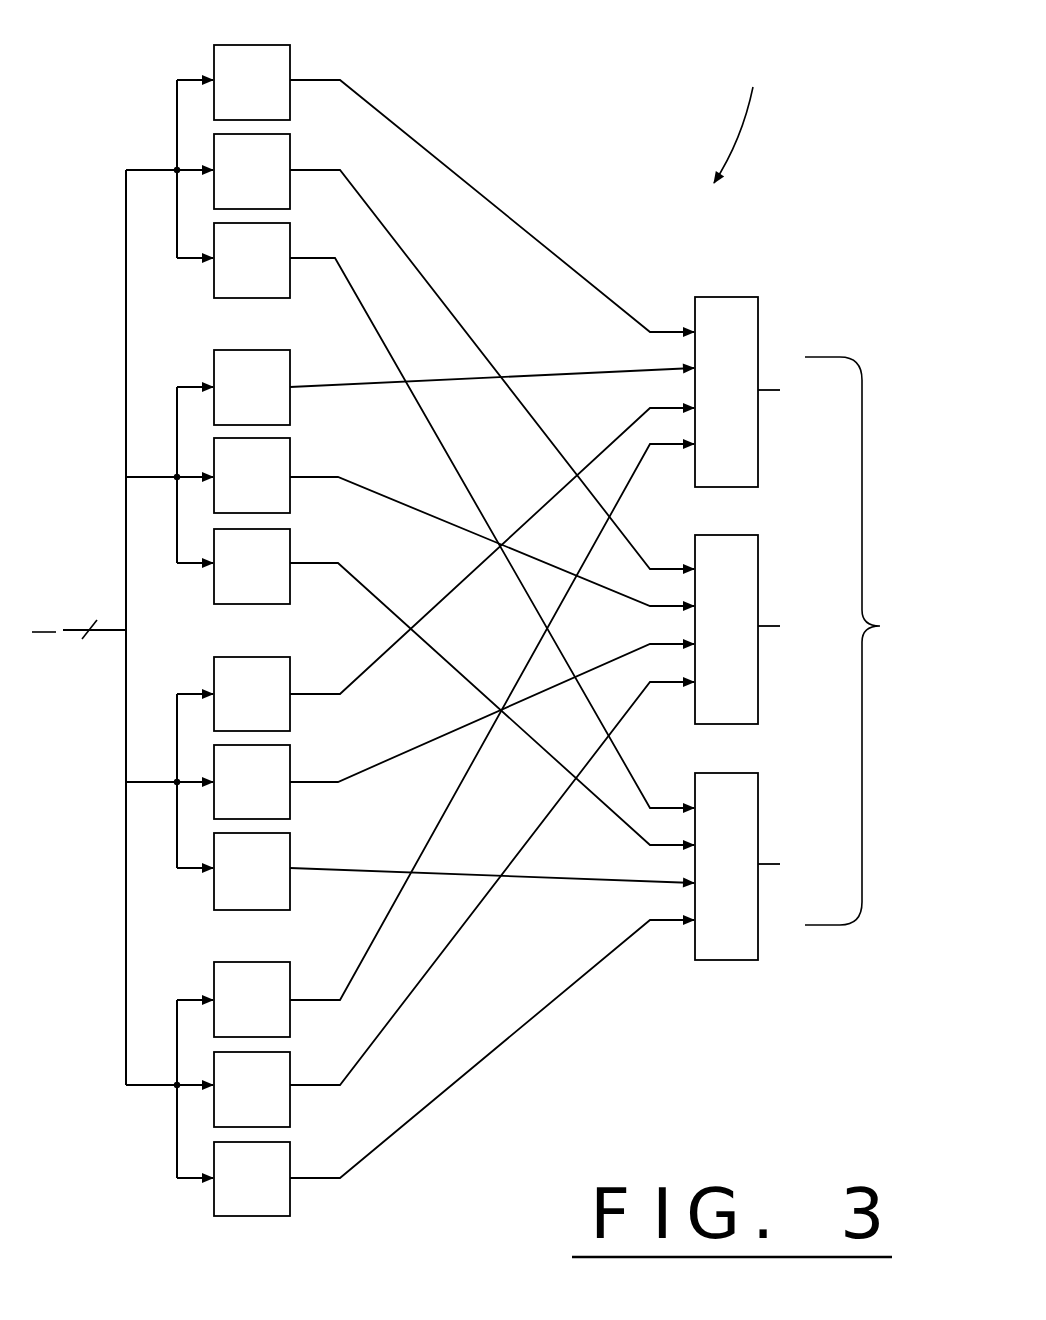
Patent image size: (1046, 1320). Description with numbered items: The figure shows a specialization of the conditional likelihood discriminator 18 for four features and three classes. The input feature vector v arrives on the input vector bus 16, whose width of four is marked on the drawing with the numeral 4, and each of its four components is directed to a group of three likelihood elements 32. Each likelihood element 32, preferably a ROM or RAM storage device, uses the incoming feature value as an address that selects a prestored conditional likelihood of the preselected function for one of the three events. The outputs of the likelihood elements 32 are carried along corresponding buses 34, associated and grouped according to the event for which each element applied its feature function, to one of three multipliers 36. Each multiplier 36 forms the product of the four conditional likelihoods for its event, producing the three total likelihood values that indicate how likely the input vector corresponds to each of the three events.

The conditional likelihood discriminator 18 is at (758, 106).
The input vector bus 16 is at (122, 629).
The bus width 4 is at (88, 619).
The likelihood elements 32 is at (253, 633).
The buses 34 is at (492, 629).
The multipliers 36 is at (787, 613).